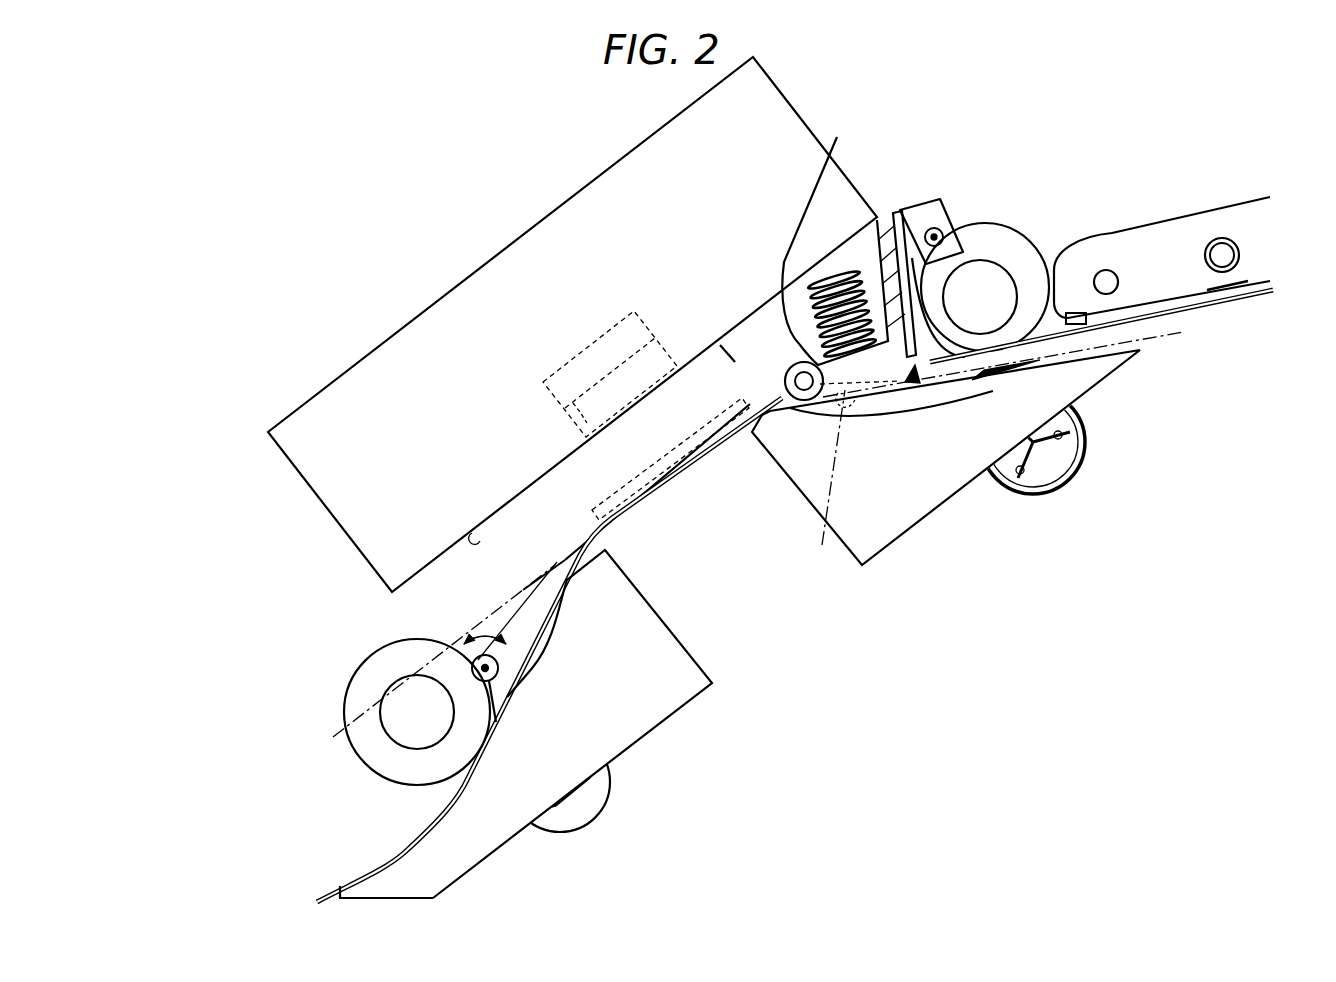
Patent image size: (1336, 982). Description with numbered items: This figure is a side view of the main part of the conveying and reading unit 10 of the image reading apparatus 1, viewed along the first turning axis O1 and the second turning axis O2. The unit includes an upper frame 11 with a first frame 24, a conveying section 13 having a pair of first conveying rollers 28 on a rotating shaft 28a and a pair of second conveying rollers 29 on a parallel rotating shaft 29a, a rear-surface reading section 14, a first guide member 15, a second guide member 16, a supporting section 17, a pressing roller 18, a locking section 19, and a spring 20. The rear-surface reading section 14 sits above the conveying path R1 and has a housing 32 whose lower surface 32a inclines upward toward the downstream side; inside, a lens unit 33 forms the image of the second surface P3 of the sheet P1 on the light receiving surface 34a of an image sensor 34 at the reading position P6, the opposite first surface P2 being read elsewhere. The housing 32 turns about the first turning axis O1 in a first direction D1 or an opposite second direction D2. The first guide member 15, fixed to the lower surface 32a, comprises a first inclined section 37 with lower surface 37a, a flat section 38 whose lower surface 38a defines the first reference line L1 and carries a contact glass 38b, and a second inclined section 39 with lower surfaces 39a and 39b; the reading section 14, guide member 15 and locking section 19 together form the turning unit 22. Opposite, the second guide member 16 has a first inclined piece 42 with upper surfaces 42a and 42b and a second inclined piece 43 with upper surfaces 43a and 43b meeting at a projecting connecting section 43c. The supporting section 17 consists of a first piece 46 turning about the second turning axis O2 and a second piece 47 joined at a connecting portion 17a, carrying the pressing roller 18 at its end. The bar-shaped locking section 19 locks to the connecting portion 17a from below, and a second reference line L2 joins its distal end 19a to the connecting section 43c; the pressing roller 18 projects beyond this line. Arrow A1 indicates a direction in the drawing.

The image reading apparatus 1 is at (197, 136).
The turning unit 22 is at (214, 201).
The conveying section 13 is at (214, 265).
The conveying and reading unit 10 is at (1184, 150).
The upper frame 11 is at (1252, 318).
The rear-surface reading section 14 is at (588, 156).
The first guide member 15 is at (358, 576).
The second guide member 16 is at (785, 740).
The supporting section 17 is at (943, 112).
The connecting portion 17a is at (878, 395).
The pressing roller 18 is at (795, 370).
The locking section 19 is at (918, 376).
The distal end 19a is at (930, 390).
The spring 20 is at (835, 302).
The first frame 24 is at (1228, 298).
The first conveying rollers 28 is at (372, 712).
The rotating shaft 28a is at (402, 730).
The second conveying rollers 29 is at (1030, 245).
The rotating shaft 29a is at (985, 278).
The housing 32 is at (482, 267).
The lower surface 32a is at (468, 538).
The lens unit 33 is at (656, 372).
The image sensor 34 is at (590, 340).
The light receiving surface 34a is at (578, 420).
The first inclined section 37 is at (478, 557).
The lower surface 37a is at (547, 600).
The flat section 38 is at (628, 470).
The lower surface 38a is at (722, 440).
The contact glass 38b is at (675, 455).
The second inclined section 39 is at (745, 345).
The lower surface 39a is at (892, 258).
The lower surface 39b is at (850, 398).
The first inclined piece 42 is at (672, 702).
The upper surface 42a is at (590, 558).
The upper surface 42b is at (538, 662).
The second inclined piece 43 is at (915, 512).
The upper surface 43a is at (760, 445).
The upper surface 43b is at (828, 400).
The connecting section 43c is at (780, 410).
The first piece 46 is at (886, 205).
The second piece 47 is at (835, 236).
The direction A1 is at (356, 318).
The first direction D1 is at (499, 626).
The second direction D2 is at (468, 626).
The first reference line L1 is at (348, 697).
The second reference line L2 is at (825, 485).
The first turning axis O1 is at (489, 676).
The second turning axis O2 is at (941, 230).
The sheet P1 is at (337, 884).
The first surface P2 is at (410, 898).
The second surface P3 is at (395, 892).
The reading position P6 is at (668, 480).
The conveying path R1 is at (1165, 337).